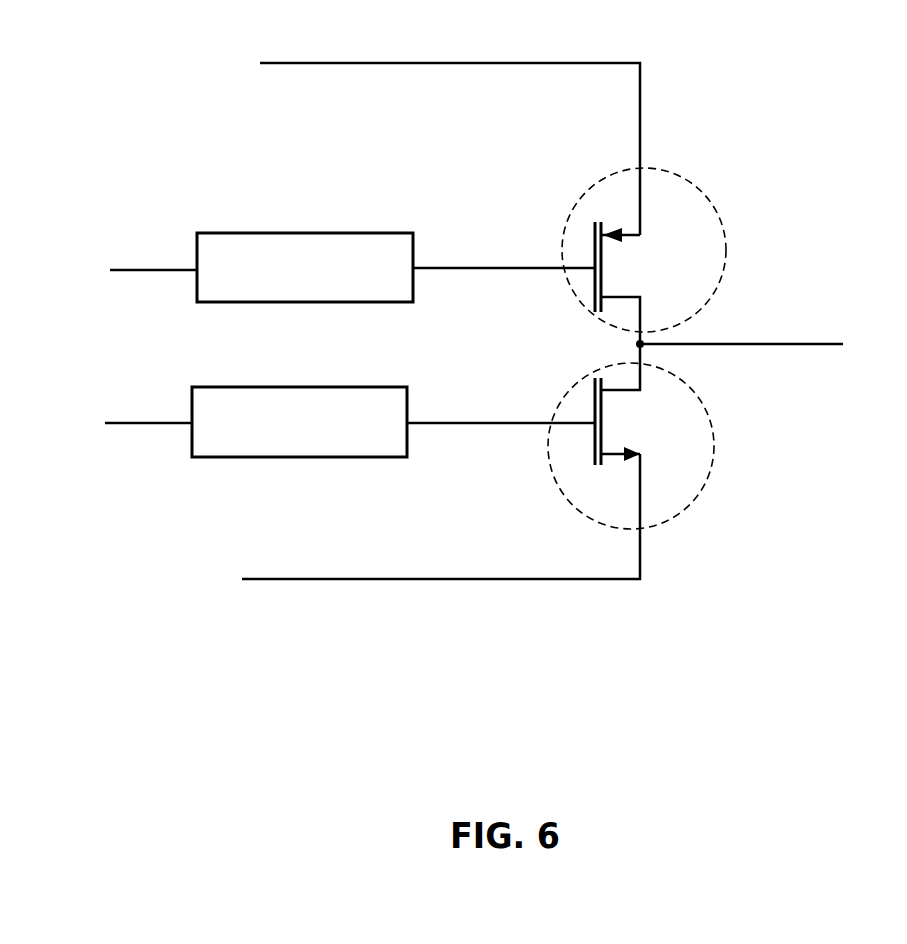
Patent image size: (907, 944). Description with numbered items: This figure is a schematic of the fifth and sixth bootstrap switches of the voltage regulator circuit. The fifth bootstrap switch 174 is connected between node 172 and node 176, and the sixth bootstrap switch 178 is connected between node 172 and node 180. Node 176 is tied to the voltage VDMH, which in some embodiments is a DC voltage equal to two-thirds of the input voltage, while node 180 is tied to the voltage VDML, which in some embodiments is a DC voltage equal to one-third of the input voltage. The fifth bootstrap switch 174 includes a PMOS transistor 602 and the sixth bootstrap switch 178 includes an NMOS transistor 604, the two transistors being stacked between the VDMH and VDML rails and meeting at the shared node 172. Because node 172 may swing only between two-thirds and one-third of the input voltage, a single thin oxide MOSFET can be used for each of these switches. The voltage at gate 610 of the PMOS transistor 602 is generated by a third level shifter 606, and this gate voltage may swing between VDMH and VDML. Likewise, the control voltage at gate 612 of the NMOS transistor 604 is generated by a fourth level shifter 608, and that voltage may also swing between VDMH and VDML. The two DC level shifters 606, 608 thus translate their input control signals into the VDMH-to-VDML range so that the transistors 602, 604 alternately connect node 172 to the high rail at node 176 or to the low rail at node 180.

The node 172 is at (813, 344).
The fifth bootstrap switch 174 is at (659, 247).
The node 176 is at (640, 124).
The sixth bootstrap switch 178 is at (660, 436).
The node 180 is at (551, 578).
The PMOS transistor 602 is at (636, 248).
The NMOS transistor 604 is at (648, 437).
The third level shifter 606 is at (293, 233).
The fourth level shifter 608 is at (285, 387).
The gate 610 is at (468, 268).
The gate 612 is at (468, 423).